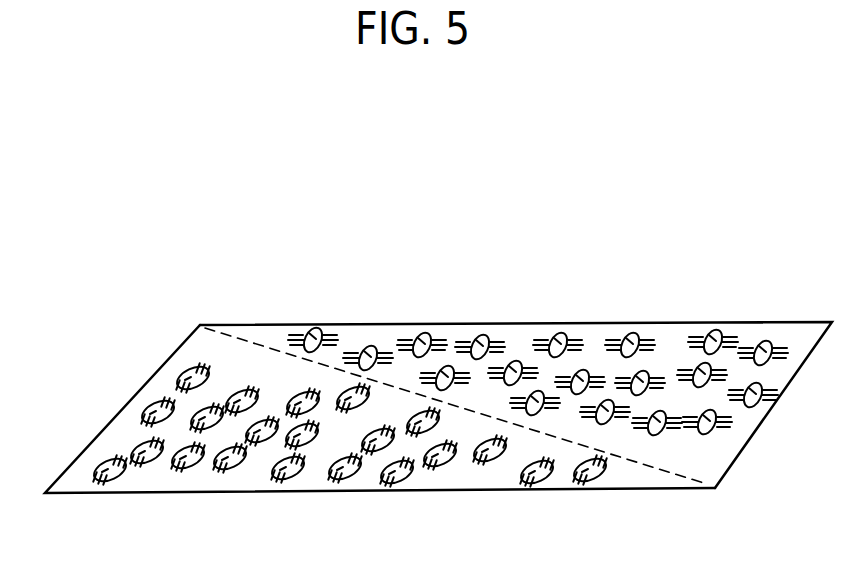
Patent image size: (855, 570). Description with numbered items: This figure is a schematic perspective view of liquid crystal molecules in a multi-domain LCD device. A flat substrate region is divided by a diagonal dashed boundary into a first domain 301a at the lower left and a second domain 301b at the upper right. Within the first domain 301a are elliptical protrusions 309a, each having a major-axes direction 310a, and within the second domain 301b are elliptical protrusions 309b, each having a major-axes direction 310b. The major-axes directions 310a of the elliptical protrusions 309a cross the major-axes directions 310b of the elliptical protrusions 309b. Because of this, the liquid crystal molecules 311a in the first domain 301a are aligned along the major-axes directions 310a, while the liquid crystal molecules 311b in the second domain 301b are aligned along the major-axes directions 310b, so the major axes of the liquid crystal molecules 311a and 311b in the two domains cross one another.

The first domain 301a is at (468, 475).
The second domain 301b is at (523, 332).
The elliptical protrusions 309a is at (176, 421).
The elliptical protrusion 309b is at (340, 330).
The major-axes directions 310a is at (144, 405).
The major-axes directions 310b is at (330, 333).
The liquid crystal molecules 311a is at (146, 418).
The liquid crystal molecules 311b is at (302, 333).